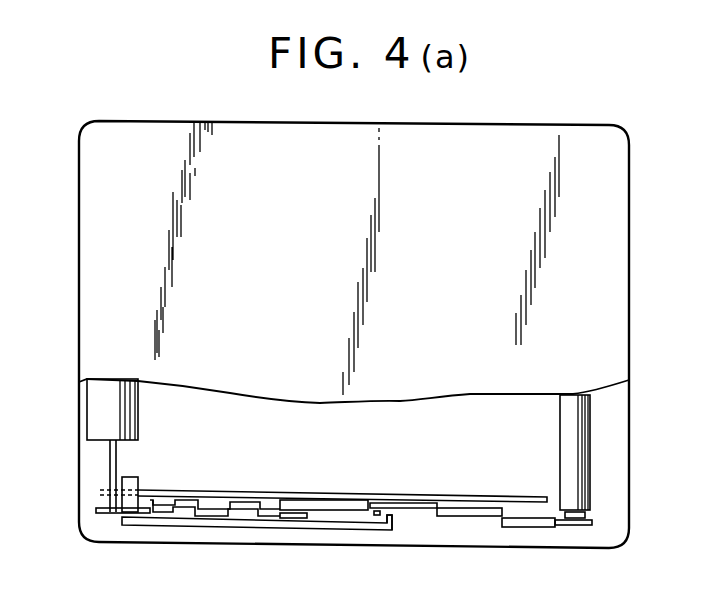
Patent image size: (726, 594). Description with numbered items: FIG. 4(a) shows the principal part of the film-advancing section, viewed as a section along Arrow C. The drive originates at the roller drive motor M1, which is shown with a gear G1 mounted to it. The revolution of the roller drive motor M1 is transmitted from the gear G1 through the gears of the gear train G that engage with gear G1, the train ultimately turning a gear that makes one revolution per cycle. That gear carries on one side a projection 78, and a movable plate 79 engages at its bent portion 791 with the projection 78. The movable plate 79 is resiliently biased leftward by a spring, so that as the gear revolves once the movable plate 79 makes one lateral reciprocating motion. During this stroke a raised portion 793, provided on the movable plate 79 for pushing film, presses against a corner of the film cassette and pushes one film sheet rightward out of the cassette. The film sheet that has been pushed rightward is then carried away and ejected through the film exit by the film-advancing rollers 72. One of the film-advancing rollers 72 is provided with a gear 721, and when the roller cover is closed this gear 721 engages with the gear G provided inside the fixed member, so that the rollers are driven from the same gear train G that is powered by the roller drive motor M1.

The roller drive motor M1 is at (98, 420).
The raised portion 793 is at (123, 481).
The gear G1 is at (106, 513).
The movable plate 79 is at (323, 530).
The projection 78 is at (378, 515).
The bent portion 791 is at (393, 522).
The gear train G is at (490, 513).
The film-advancing rollers 72 is at (582, 472).
The gear 721 is at (592, 525).